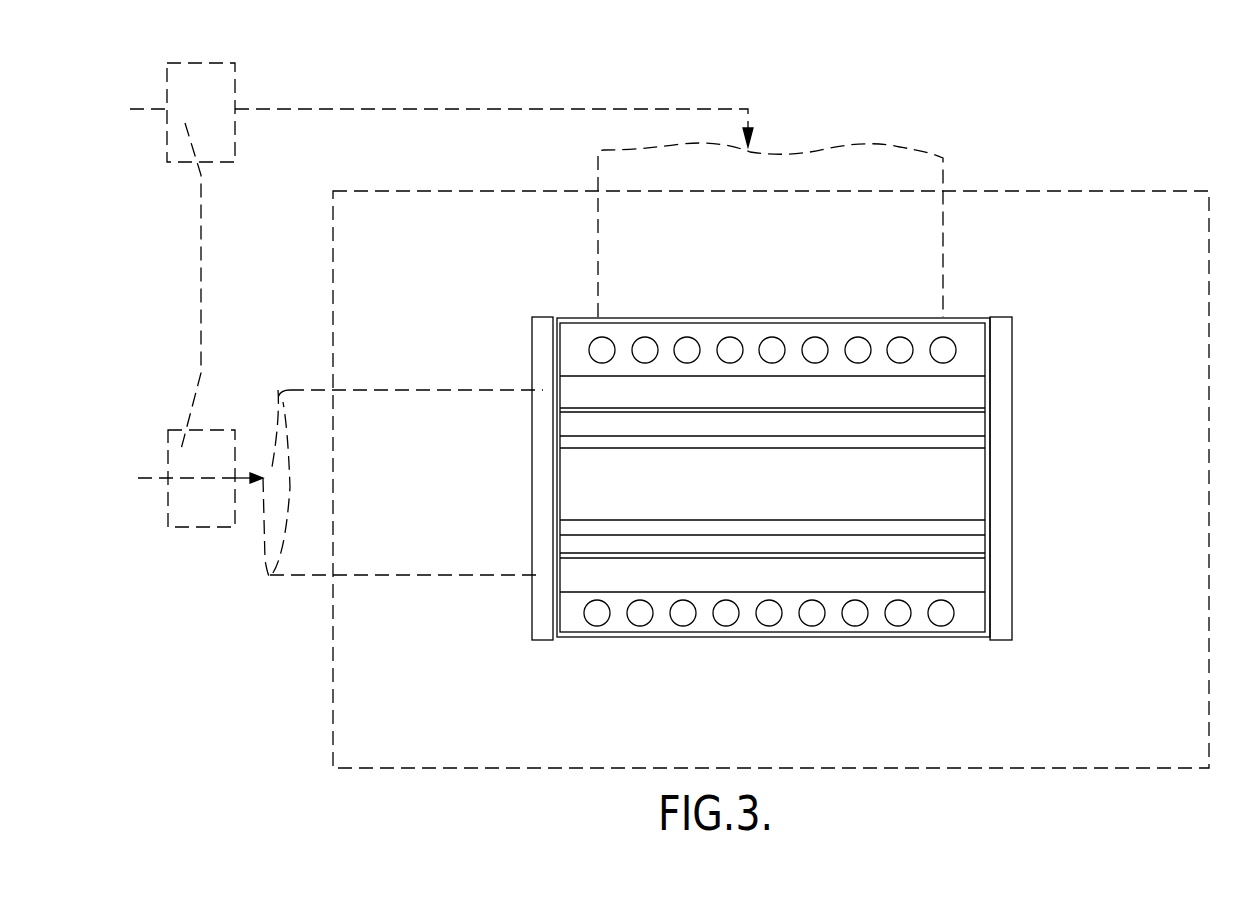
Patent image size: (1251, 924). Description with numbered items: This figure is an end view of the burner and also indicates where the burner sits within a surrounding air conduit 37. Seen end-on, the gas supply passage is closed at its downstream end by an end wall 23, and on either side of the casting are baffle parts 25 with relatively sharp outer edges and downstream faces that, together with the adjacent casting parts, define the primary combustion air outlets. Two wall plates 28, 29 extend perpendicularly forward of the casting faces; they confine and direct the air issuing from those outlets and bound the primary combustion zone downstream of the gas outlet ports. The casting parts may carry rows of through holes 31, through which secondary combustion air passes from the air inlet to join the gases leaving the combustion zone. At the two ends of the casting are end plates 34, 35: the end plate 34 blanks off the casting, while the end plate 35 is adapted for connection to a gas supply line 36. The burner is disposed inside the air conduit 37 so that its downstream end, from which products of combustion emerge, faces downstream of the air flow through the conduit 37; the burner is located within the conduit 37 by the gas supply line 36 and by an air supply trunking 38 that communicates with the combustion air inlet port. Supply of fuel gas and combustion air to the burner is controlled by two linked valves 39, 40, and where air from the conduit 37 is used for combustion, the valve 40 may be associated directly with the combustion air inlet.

The end wall 23 is at (958, 488).
The baffle parts 25 is at (968, 443).
The wall plate 28 is at (683, 410).
The wall plate 29 is at (790, 557).
The through holes 31 is at (817, 350).
The end plate 34 is at (1000, 343).
The end plate 35 is at (542, 340).
The gas supply line 36 is at (456, 553).
The air conduit 37 is at (1145, 713).
The air supply trunking 38 is at (915, 178).
The valve 39 is at (195, 510).
The valve 40 is at (213, 143).